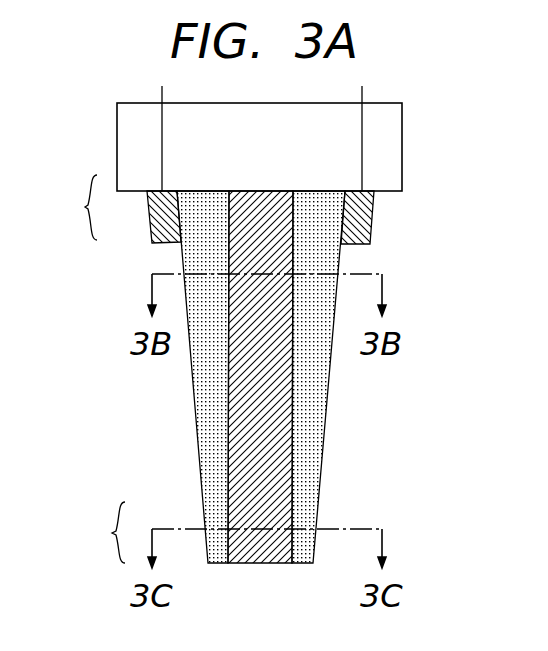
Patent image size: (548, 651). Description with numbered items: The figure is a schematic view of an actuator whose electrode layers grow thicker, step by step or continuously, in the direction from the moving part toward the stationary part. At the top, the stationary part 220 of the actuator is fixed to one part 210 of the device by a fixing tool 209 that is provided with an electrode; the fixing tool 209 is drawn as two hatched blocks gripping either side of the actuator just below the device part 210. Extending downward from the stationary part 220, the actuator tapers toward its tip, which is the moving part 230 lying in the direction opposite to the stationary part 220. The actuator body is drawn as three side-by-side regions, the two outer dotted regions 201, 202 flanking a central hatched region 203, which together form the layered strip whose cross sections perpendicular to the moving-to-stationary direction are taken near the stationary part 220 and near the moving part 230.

The part of the device 210 is at (393, 132).
The fixing tool 209 is at (150, 218).
The stationary part 220 is at (70, 207).
The moving part 230 is at (98, 532).
The first side portion 201 is at (218, 558).
The second side portion 202 is at (302, 558).
The central core portion 203 is at (262, 553).